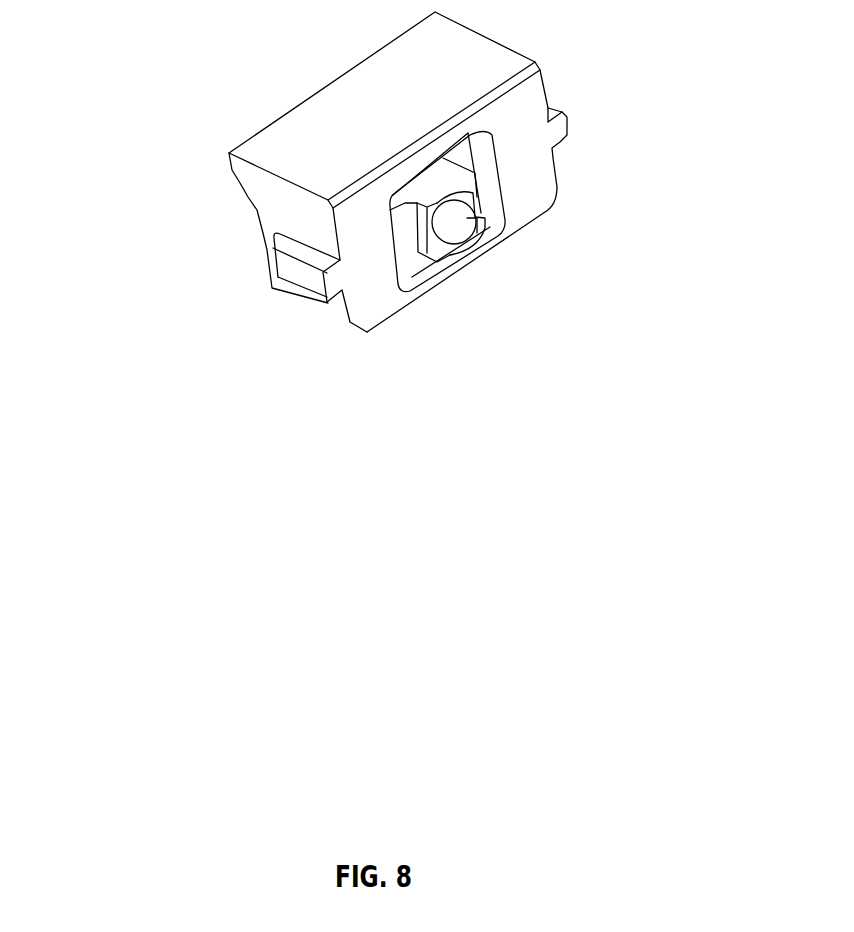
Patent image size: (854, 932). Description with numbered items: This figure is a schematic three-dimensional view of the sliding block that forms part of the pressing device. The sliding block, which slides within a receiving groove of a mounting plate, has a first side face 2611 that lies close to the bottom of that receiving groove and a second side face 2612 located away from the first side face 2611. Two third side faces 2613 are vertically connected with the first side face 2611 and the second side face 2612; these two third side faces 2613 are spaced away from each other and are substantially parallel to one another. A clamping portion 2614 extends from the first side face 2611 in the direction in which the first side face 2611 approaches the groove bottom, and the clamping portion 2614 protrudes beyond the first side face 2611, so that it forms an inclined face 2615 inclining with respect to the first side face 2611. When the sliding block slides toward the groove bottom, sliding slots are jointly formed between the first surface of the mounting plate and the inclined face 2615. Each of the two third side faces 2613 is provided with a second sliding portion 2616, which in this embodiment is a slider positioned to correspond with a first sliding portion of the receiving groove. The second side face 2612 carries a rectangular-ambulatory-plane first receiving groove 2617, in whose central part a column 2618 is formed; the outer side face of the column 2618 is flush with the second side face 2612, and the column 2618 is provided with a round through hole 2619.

The first side face 2611 is at (266, 251).
The second side face 2612 is at (377, 293).
The third side face 2613 is at (332, 310).
The clamping portion 2614 is at (238, 172).
The inclined face 2615 is at (235, 175).
The second sliding portion 2616 is at (311, 281).
The first receiving groove 2617 is at (473, 156).
The column 2618 is at (448, 183).
The round through hole 2619 is at (458, 226).